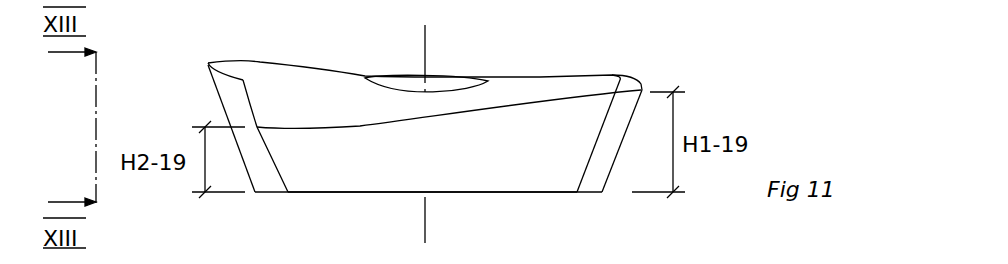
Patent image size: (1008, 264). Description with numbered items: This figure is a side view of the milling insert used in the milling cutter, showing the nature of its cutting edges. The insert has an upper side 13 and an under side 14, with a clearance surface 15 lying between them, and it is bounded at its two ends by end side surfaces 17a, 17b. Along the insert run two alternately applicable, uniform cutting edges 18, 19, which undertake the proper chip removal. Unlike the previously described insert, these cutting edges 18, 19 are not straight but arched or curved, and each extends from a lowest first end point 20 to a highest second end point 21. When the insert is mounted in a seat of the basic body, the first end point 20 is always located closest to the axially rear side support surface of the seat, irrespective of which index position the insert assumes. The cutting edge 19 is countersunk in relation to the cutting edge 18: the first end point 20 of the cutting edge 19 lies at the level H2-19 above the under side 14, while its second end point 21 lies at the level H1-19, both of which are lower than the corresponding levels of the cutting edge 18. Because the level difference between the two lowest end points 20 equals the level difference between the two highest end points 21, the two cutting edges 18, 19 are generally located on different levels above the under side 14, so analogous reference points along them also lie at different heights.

The upper side 13 is at (348, 110).
The under side 14 is at (343, 193).
The clearance surface 15 is at (551, 161).
The end side surface 17a is at (225, 85).
The end side surface 17b is at (623, 147).
The cutting edge 18 is at (270, 62).
The cutting edge 19 is at (582, 95).
The first end point 20 is at (267, 170).
The second end point 21 is at (620, 80).